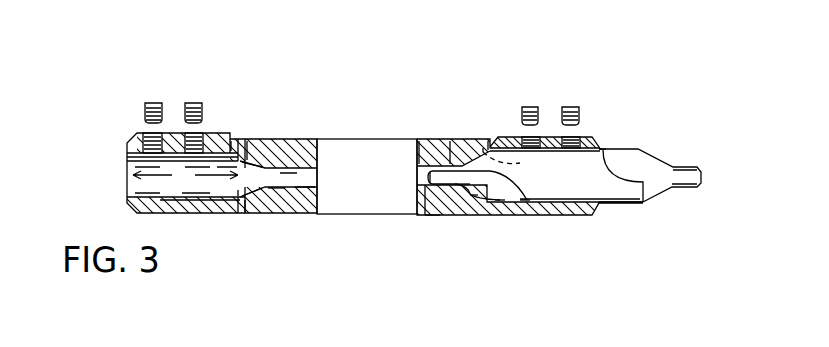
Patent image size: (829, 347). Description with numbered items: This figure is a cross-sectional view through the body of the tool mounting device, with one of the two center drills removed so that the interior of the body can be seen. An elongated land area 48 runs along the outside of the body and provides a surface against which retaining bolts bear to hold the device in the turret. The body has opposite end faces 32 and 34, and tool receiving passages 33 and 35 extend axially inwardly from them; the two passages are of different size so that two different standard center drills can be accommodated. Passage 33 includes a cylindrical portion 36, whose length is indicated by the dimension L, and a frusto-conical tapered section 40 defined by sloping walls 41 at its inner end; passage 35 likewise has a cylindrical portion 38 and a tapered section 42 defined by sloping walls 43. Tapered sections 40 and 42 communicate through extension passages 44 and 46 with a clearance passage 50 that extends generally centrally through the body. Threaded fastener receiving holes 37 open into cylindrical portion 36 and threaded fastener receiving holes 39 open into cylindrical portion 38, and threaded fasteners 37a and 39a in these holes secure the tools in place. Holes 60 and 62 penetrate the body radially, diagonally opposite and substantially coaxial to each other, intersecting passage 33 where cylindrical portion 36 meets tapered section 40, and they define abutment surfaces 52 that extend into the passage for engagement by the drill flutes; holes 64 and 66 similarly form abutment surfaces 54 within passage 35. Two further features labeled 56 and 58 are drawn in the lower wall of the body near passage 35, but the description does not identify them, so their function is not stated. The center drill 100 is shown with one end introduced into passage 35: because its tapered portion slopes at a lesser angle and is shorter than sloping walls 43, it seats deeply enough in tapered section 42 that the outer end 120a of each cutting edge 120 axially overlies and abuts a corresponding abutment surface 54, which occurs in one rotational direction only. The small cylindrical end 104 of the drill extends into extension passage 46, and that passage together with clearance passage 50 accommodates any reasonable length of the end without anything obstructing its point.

The end face 32 is at (131, 141).
The tool receiving passage 33 is at (135, 188).
The end face 34 is at (600, 203).
The tool receiving passage 35 is at (613, 139).
The cylindrical portion 36 is at (167, 204).
The threaded fastener receiving holes 37 is at (197, 134).
The threaded fasteners 37a is at (150, 104).
The cylindrical portion 38 is at (590, 206).
The threaded fastener receiving holes 39 is at (540, 136).
The threaded fasteners 39a is at (533, 107).
The tapered section 40 is at (262, 150).
The sloping walls 41 is at (272, 190).
The tapered section 42 is at (475, 199).
The sloping walls 43 is at (456, 139).
The extension passage 44 is at (305, 190).
The extension passage 46 is at (437, 186).
The land area 48 is at (426, 139).
The clearance passage 50 is at (370, 153).
The abutment surfaces 52 is at (235, 190).
The abutment surfaces 54 is at (300, 162).
The tube wall 56 is at (525, 203).
The sleeve end 58 is at (462, 196).
The hole 60 is at (237, 138).
The hole 62 is at (245, 200).
The hole 64 is at (491, 139).
The hole 66 is at (500, 205).
The center drill 100 is at (645, 187).
The end 104 is at (430, 215).
The cutting edges 120 is at (478, 193).
The outer end 120a is at (482, 139).